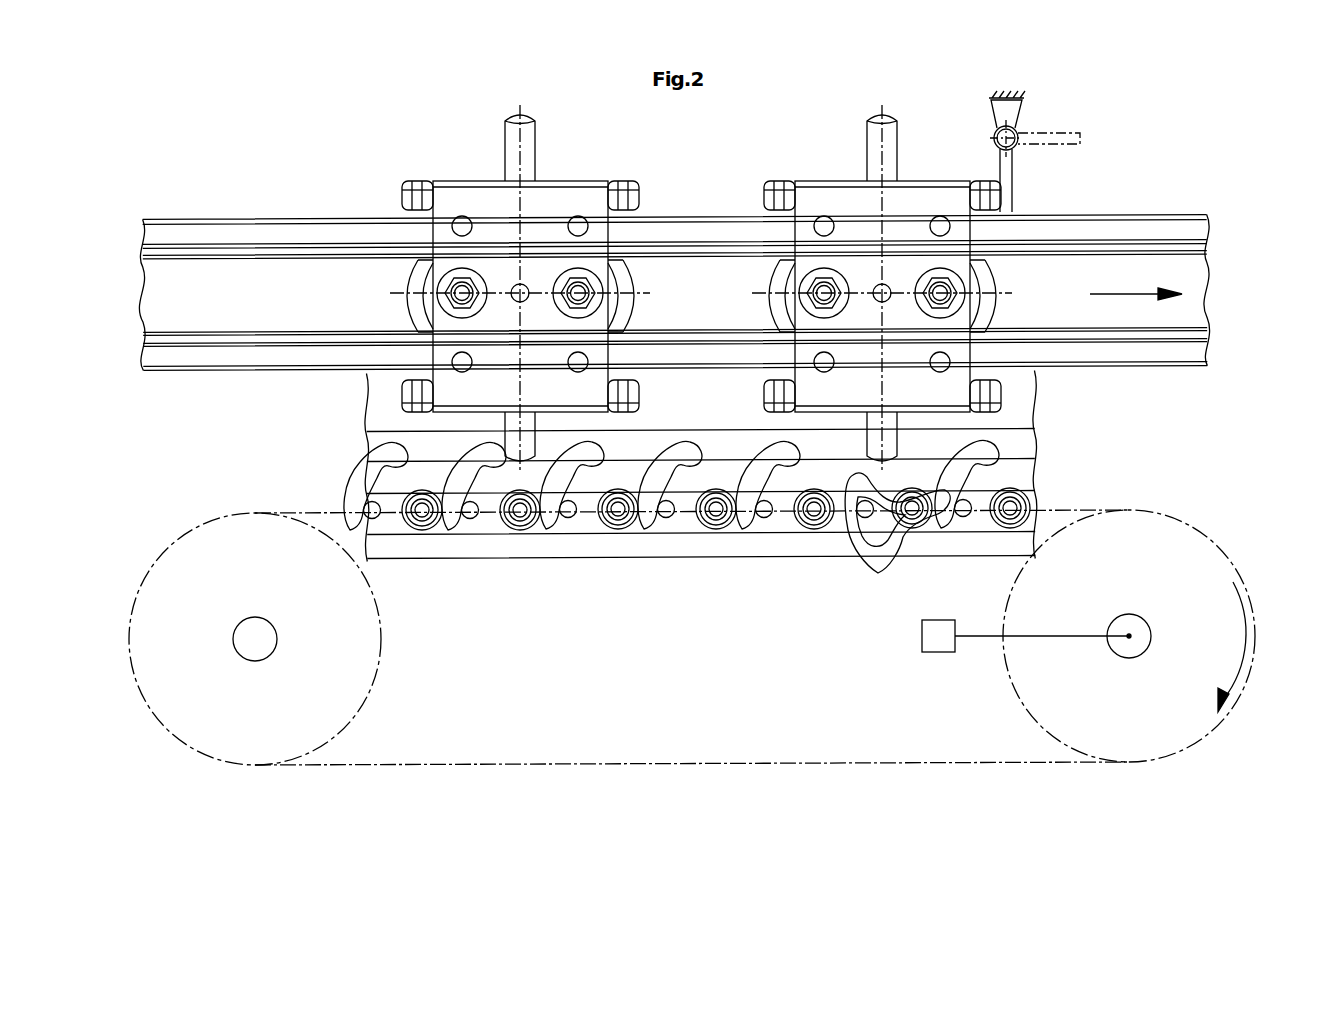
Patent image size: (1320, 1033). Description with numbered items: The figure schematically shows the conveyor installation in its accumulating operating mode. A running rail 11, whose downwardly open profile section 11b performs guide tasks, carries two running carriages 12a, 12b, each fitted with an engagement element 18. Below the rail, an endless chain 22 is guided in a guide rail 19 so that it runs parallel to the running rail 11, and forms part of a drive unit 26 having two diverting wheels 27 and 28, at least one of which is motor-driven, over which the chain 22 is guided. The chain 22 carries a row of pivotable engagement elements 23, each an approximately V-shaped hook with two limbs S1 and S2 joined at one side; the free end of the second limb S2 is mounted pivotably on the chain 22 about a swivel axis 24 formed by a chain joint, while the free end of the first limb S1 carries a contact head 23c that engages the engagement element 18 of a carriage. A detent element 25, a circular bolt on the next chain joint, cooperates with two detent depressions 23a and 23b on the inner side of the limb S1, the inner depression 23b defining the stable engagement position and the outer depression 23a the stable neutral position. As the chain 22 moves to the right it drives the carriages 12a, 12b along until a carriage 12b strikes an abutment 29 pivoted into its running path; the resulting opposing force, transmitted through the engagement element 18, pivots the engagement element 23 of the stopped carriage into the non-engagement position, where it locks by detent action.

The running rail 11 is at (1222, 208).
The profile section 11b is at (222, 282).
The running carriage 12a is at (470, 140).
The running carriage 12b is at (830, 140).
The engagement element 18 is at (527, 150).
The guide rail 19 is at (1014, 474).
The chain 22 is at (692, 637).
The engagement element 23 is at (866, 563).
The detent depression 23a is at (488, 476).
The detent depression 23b is at (886, 549).
The contact head 23c is at (863, 489).
The swivel axis 24 is at (618, 530).
The detent element 25 is at (570, 515).
The drive unit 26 is at (710, 656).
The diverting wheel 27 is at (182, 725).
The diverting wheel 28 is at (1247, 510).
The abutment 29 is at (1012, 198).
The first limb S1 is at (855, 537).
The second limb S2 is at (902, 540).